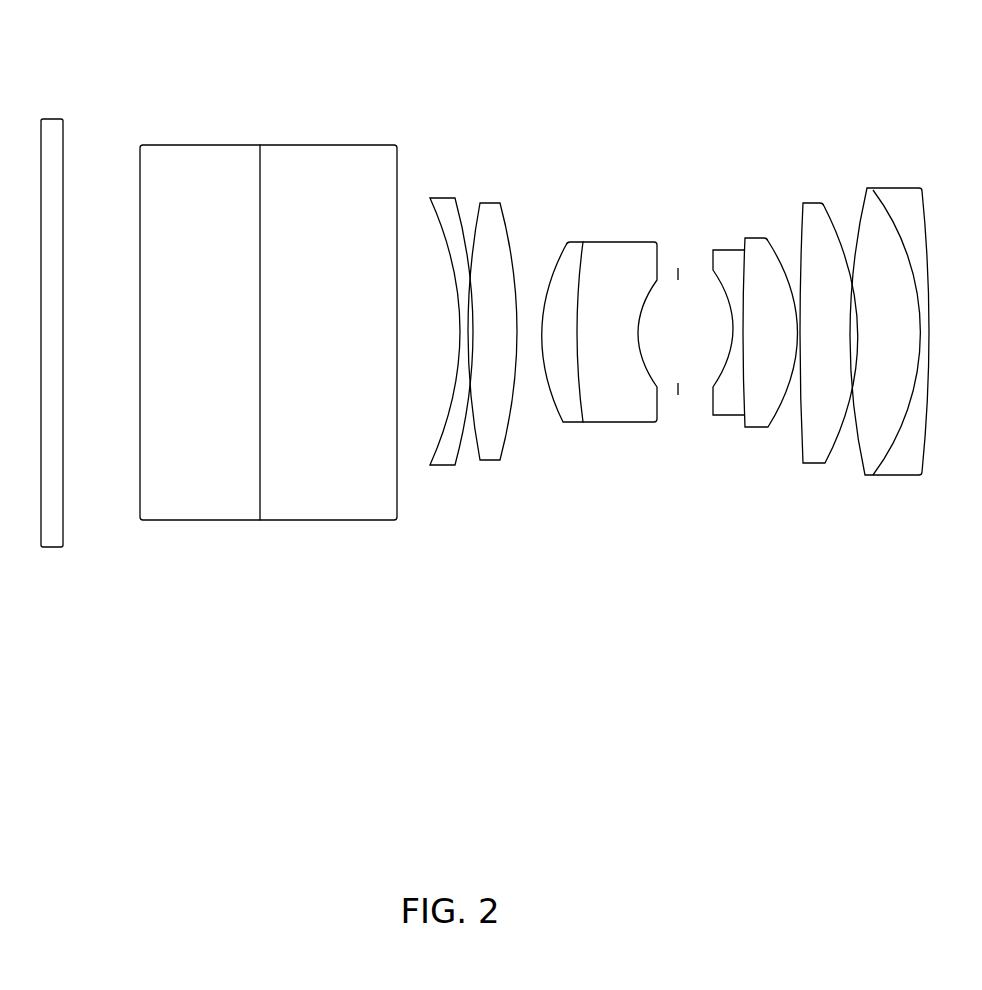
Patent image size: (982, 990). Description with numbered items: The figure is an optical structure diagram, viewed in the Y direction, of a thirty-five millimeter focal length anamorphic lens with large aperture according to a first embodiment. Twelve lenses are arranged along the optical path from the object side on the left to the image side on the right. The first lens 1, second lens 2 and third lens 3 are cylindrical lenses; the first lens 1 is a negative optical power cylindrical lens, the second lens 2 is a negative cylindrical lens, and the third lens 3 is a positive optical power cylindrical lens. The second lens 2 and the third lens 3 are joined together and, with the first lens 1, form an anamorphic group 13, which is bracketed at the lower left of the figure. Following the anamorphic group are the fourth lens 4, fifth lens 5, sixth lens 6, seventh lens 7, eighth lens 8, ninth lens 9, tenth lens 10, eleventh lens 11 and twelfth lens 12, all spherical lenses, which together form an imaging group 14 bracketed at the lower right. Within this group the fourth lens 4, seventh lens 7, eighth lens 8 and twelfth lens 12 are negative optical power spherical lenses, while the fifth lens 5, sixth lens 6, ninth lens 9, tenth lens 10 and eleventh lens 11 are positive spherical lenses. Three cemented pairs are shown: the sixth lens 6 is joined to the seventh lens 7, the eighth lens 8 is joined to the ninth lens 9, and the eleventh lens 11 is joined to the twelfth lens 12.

The first lens 1 is at (56, 478).
The second lens 2 is at (194, 163).
The third lens 3 is at (333, 478).
The fourth lens 4 is at (445, 462).
The fifth lens 5 is at (490, 232).
The sixth lens 6 is at (556, 268).
The seventh lens 7 is at (613, 270).
The eighth lens 8 is at (723, 268).
The ninth lens 9 is at (751, 268).
The tenth lens 10 is at (807, 270).
The eleventh lens 11 is at (863, 270).
The twelfth lens 12 is at (891, 453).
The anamorphic group 13 is at (208, 739).
The imaging group 14 is at (663, 743).